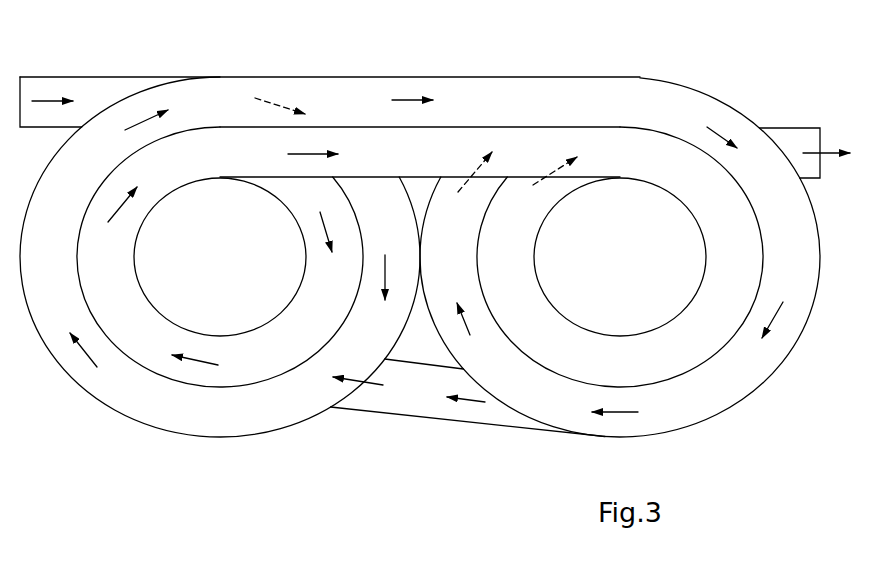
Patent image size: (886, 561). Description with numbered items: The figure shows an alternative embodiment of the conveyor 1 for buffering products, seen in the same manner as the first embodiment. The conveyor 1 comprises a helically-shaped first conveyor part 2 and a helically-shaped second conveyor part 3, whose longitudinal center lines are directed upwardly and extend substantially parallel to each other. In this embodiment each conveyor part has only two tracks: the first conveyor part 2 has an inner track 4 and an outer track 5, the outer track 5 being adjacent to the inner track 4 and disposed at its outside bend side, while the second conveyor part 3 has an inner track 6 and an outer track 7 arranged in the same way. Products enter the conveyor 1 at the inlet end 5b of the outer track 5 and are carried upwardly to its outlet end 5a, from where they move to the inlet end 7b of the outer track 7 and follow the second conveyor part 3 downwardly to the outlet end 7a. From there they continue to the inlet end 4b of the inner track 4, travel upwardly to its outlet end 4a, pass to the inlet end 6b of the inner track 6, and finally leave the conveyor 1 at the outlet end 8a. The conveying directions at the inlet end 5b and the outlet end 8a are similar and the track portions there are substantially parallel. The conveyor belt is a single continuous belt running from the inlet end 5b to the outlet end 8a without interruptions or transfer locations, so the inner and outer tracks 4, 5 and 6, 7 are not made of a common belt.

The conveyor 1 is at (730, 77).
The first conveyor part 2 is at (107, 405).
The second conveyor part 3 is at (731, 413).
The inner track 4 is at (183, 373).
The outlet end 4a is at (350, 143).
The inlet end 4b is at (368, 397).
The outer track 5 is at (197, 410).
The outlet end 5a is at (308, 93).
The inlet end 5b is at (70, 87).
The inner track 6 is at (673, 360).
The inlet end 6b is at (532, 150).
The outer track 7 is at (718, 397).
The outlet end 7a is at (490, 413).
The inlet end 7b is at (492, 93).
The outlet end 8a is at (793, 133).